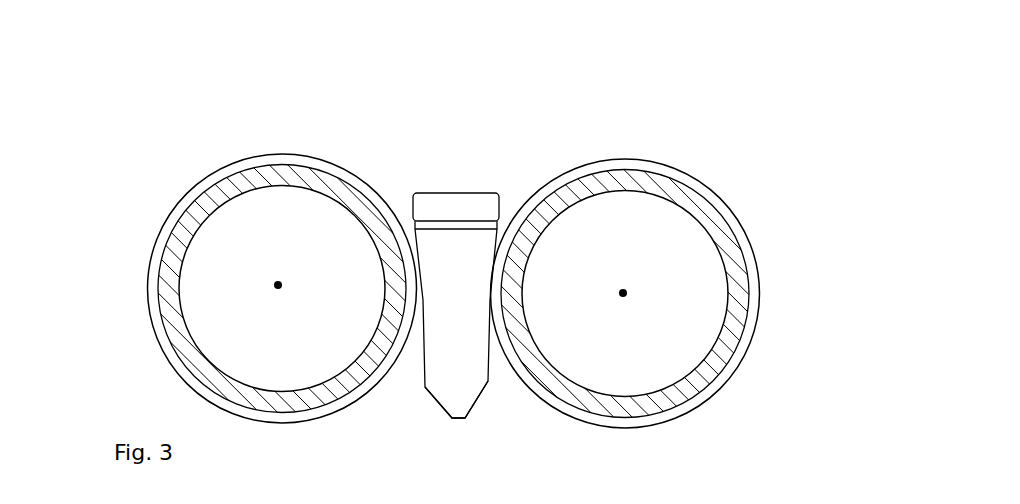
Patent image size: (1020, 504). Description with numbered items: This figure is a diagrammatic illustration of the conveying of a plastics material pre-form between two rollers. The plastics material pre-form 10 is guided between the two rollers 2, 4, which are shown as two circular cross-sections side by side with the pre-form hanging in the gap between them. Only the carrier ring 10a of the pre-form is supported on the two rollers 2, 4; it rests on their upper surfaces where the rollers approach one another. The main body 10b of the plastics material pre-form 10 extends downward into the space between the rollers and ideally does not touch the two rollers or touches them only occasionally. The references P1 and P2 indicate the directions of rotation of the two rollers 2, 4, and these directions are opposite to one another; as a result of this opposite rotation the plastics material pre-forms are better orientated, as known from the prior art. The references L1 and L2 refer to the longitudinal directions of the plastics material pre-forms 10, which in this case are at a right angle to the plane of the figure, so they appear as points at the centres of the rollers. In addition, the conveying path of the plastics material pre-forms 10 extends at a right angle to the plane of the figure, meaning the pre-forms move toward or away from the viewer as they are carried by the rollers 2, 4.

The roller 2 is at (737, 183).
The roller 4 is at (196, 167).
The plastics material pre-form 10 is at (465, 252).
The carrier ring 10a is at (505, 220).
The main body 10b is at (430, 313).
The longitudinal direction L1 is at (623, 295).
The longitudinal direction L2 is at (278, 287).
The direction of rotation P1 is at (126, 345).
The direction of rotation P2 is at (780, 348).